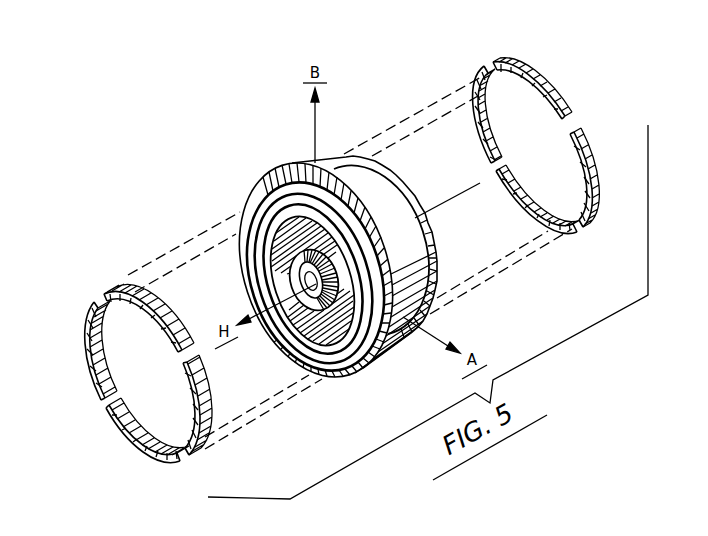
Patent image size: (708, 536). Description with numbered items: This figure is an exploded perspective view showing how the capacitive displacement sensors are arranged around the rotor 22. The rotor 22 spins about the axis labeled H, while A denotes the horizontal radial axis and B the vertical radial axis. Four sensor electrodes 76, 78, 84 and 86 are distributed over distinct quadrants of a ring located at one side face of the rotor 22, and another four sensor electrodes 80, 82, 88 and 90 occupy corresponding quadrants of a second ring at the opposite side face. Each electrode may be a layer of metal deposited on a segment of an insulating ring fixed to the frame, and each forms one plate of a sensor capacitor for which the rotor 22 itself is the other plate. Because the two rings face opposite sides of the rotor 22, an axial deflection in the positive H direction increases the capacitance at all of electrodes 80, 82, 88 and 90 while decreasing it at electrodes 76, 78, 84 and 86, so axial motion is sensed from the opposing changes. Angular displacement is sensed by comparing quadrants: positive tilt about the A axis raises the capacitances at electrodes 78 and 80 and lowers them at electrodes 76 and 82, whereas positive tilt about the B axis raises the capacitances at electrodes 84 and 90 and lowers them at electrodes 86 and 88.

The rotor 22 is at (300, 170).
The sensor electrode 76 is at (537, 72).
The sensor electrode 78 is at (516, 213).
The sensor electrode 84 is at (598, 151).
The sensor electrode 86 is at (476, 124).
The sensor electrode 80 is at (128, 283).
The sensor electrode 82 is at (152, 458).
The sensor electrode 88 is at (204, 372).
The sensor electrode 90 is at (84, 353).